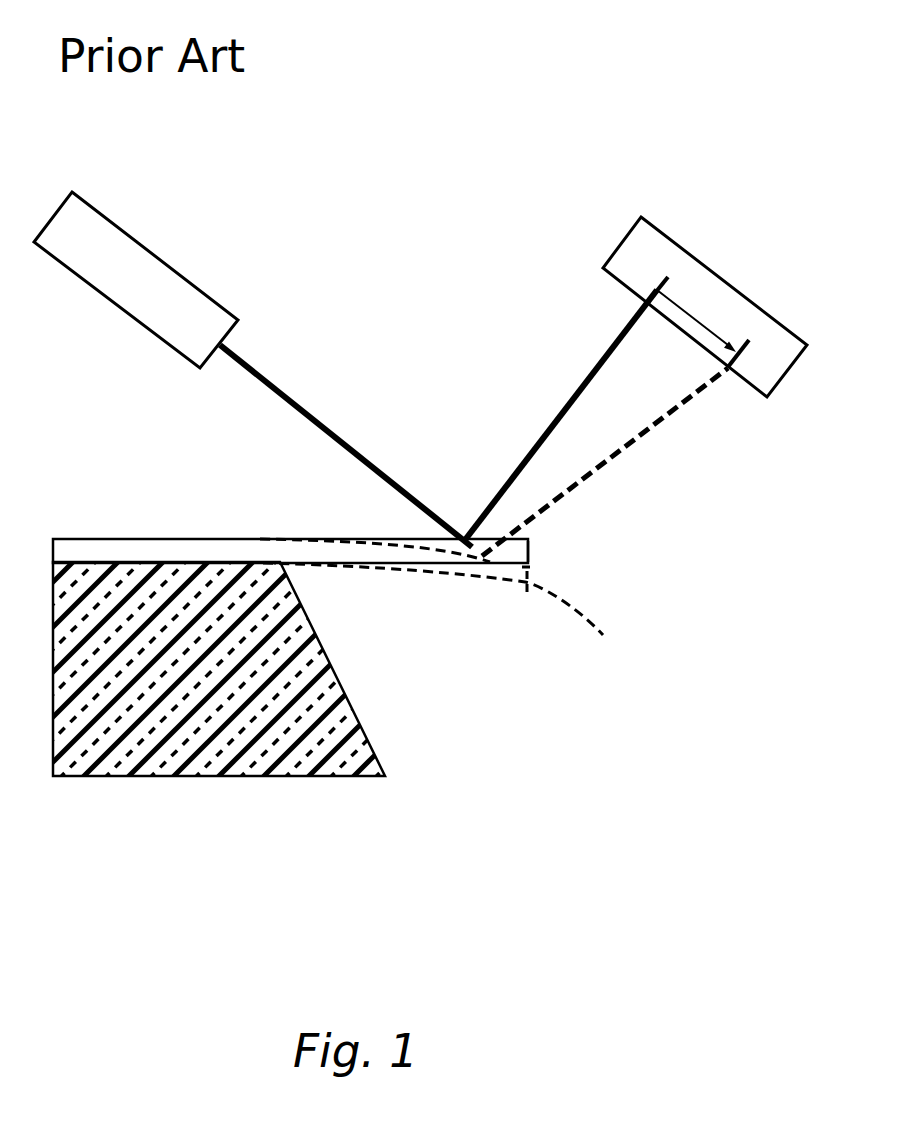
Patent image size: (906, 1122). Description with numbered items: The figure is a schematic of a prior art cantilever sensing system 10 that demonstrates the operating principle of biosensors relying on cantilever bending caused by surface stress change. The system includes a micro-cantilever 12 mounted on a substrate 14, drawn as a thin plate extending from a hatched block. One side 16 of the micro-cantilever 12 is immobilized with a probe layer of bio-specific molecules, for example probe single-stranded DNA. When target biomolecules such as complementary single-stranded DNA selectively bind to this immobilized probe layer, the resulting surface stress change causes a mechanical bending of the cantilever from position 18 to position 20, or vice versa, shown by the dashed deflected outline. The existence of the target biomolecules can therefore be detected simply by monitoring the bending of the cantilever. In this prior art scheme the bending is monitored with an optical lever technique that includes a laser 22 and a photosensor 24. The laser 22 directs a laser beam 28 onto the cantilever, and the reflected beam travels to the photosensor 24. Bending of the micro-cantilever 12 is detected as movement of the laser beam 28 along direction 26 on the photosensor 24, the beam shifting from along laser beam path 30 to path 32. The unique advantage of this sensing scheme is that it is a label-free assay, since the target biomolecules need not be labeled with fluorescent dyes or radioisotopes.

The cantilever sensing system 10 is at (492, 120).
The micro-cantilever 12 is at (208, 538).
The substrate 14 is at (333, 668).
The side 16 is at (347, 538).
The position 18 is at (528, 550).
The position 20 is at (445, 617).
The laser 22 is at (158, 252).
The photosensor 24 is at (622, 242).
The direction 26 is at (700, 318).
The laser beam 28 is at (307, 407).
The laser beam path 30 is at (553, 420).
The path 32 is at (627, 453).